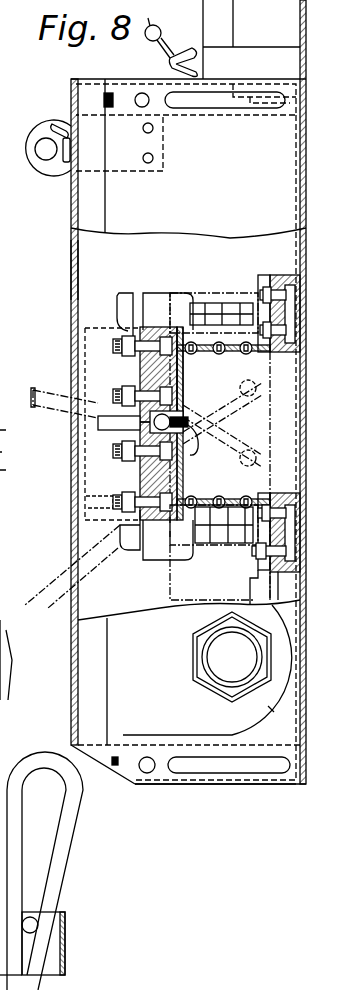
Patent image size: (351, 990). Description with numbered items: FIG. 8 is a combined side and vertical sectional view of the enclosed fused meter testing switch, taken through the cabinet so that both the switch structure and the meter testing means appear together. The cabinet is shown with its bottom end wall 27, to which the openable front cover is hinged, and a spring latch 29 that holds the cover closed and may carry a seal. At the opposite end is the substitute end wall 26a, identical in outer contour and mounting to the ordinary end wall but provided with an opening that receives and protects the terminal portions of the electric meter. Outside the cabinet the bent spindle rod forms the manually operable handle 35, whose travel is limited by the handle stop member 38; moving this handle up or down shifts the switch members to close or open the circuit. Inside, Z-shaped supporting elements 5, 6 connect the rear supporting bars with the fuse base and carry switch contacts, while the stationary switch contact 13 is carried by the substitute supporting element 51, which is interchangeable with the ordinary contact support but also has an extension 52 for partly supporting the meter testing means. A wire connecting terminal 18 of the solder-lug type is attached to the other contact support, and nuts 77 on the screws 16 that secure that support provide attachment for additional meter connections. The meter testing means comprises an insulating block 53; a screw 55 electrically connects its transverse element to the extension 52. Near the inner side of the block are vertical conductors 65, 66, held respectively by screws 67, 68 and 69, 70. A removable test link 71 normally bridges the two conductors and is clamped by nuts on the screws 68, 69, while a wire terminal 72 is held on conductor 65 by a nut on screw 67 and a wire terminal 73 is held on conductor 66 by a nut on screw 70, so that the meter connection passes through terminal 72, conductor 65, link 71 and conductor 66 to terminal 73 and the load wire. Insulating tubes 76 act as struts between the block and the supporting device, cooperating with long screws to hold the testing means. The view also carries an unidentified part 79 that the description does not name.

The supporting element 5 is at (262, 500).
The supporting element 6 is at (268, 348).
The stationary switch contact 13 is at (203, 352).
The screws 16 is at (280, 498).
The wire connecting terminal 18 is at (250, 592).
The cabinet end wall 26a is at (131, 80).
The end wall 27 is at (238, 784).
The spring latch 29 is at (46, 124).
The handle 35 is at (68, 853).
The handle stop member 38 is at (64, 954).
The substitute supporting element 51 is at (262, 284).
The extension 52 is at (183, 416).
The insulating block 53 is at (148, 292).
The screw 55 is at (198, 444).
The vertical conductor 65 is at (140, 372).
The vertical conductor 66 is at (140, 478).
The screw 67 is at (116, 345).
The screw 68 is at (116, 395).
The screw 69 is at (116, 450).
The screw 70 is at (114, 496).
The removable test link 71 is at (120, 420).
The wire terminal 72 is at (124, 300).
The wire terminal 73 is at (120, 548).
The tubes 76 is at (202, 300).
The nuts 77 is at (252, 540).
The side wall 79 is at (0, 248).